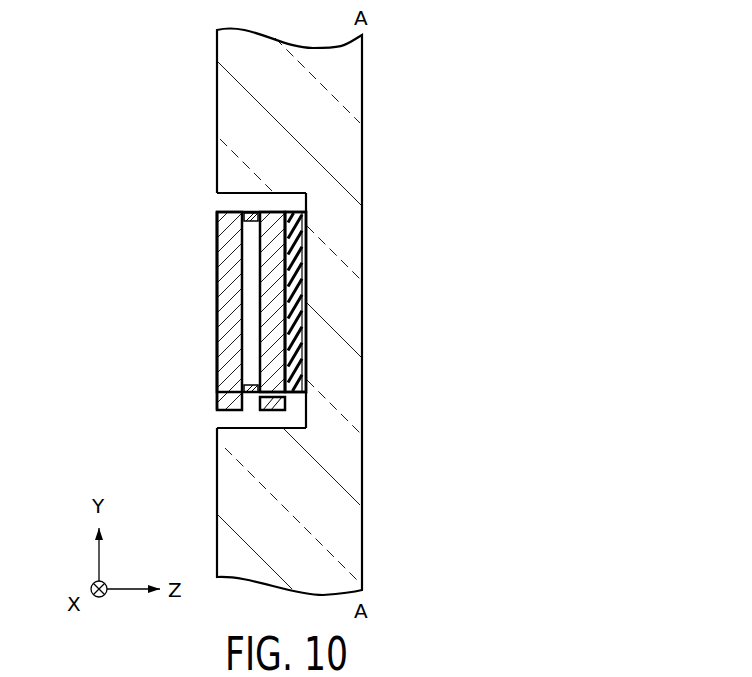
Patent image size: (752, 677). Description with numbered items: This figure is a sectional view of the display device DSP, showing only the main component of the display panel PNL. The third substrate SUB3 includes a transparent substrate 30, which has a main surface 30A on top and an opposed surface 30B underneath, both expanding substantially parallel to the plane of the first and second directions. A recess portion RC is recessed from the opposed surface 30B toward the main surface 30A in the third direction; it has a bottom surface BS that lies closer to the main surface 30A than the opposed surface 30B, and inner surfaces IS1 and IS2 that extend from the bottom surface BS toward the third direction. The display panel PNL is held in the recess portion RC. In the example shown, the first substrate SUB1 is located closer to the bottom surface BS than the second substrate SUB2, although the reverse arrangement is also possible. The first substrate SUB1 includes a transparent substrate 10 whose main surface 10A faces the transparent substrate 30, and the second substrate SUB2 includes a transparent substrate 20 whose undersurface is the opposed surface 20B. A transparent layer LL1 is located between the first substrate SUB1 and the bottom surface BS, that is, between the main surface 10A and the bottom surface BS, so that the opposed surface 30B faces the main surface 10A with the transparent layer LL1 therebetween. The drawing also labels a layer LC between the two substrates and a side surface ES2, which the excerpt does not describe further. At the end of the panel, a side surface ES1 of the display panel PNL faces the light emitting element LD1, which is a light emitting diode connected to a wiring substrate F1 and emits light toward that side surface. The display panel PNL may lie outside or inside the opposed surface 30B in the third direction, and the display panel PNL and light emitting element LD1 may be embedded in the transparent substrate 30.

The display device DSP is at (412, 62).
The transparent substrate 30 is at (354, 143).
The main surface 30A is at (377, 187).
The opposed surface 30B is at (201, 112).
The third substrate SUB3 is at (375, 98).
The second end surface ES2 is at (275, 206).
The side surface ES1 is at (234, 429).
The inner surface IS2 is at (233, 196).
The inner surface IS1 is at (287, 414).
The recess portion RC is at (233, 416).
The display panel PNL is at (215, 330).
The second substrate SUB2 is at (165, 311).
The transparent substrate 20 is at (226, 247).
The opposed surface 20B is at (215, 353).
The first substrate SUB1 is at (257, 302).
The transparent substrate 10 is at (268, 286).
The main surface 10A is at (295, 357).
The liquid crystal layer LC is at (244, 231).
The light emitting element LD1 is at (257, 400).
The transparent layer LL1 is at (298, 273).
The bottom surface BS is at (298, 292).
The wiring substrate F1 is at (293, 397).